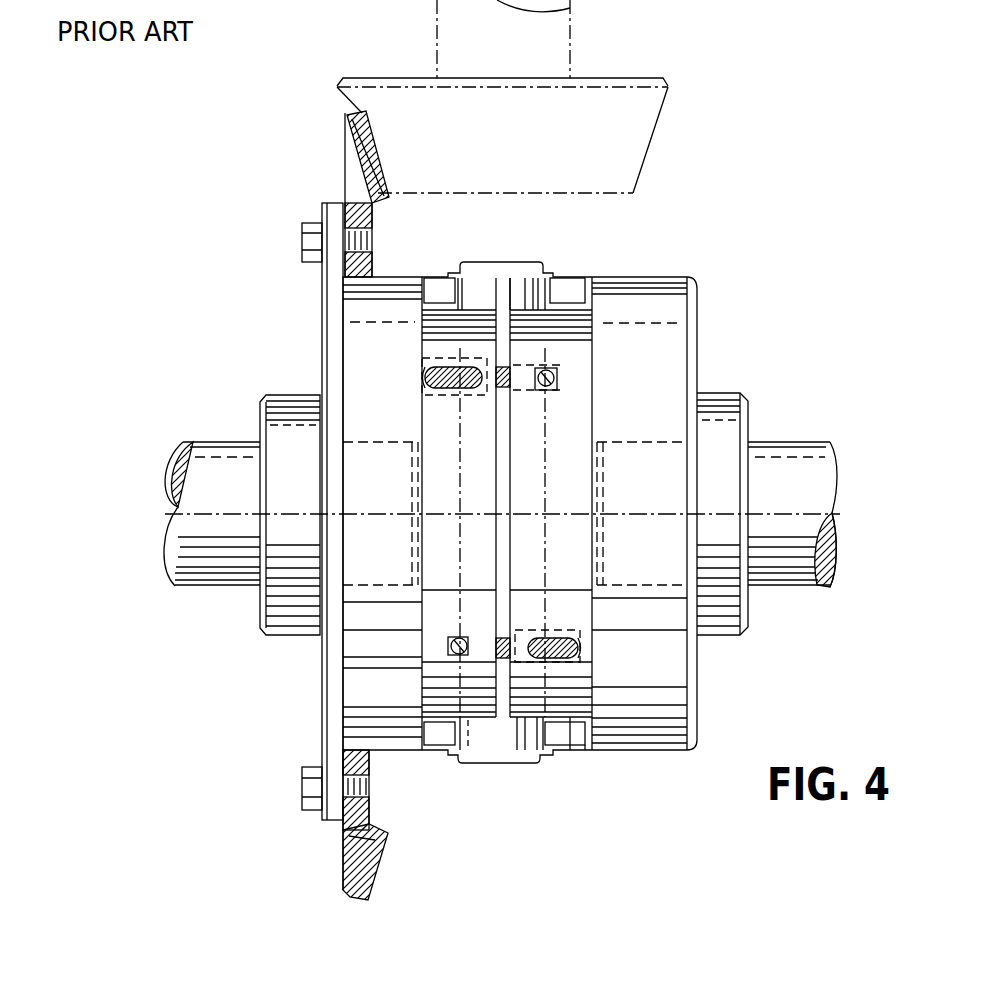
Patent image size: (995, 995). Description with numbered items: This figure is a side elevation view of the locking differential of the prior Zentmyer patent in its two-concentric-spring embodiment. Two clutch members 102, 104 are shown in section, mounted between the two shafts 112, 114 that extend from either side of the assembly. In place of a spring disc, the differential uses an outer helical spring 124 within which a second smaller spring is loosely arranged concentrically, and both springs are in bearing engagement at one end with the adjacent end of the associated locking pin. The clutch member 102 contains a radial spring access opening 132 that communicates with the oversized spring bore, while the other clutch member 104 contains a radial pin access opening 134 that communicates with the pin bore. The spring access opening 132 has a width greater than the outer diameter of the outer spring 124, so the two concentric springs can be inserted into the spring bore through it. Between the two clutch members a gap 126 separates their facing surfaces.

The clutch member 102 is at (443, 688).
The clutch member 104 is at (562, 695).
The input shaft 112 is at (200, 560).
The output shaft 114 is at (793, 450).
The outer spring 124 is at (428, 367).
The gap 126 is at (499, 388).
The spring access opening 132 is at (428, 386).
The pin access opening 134 is at (553, 377).